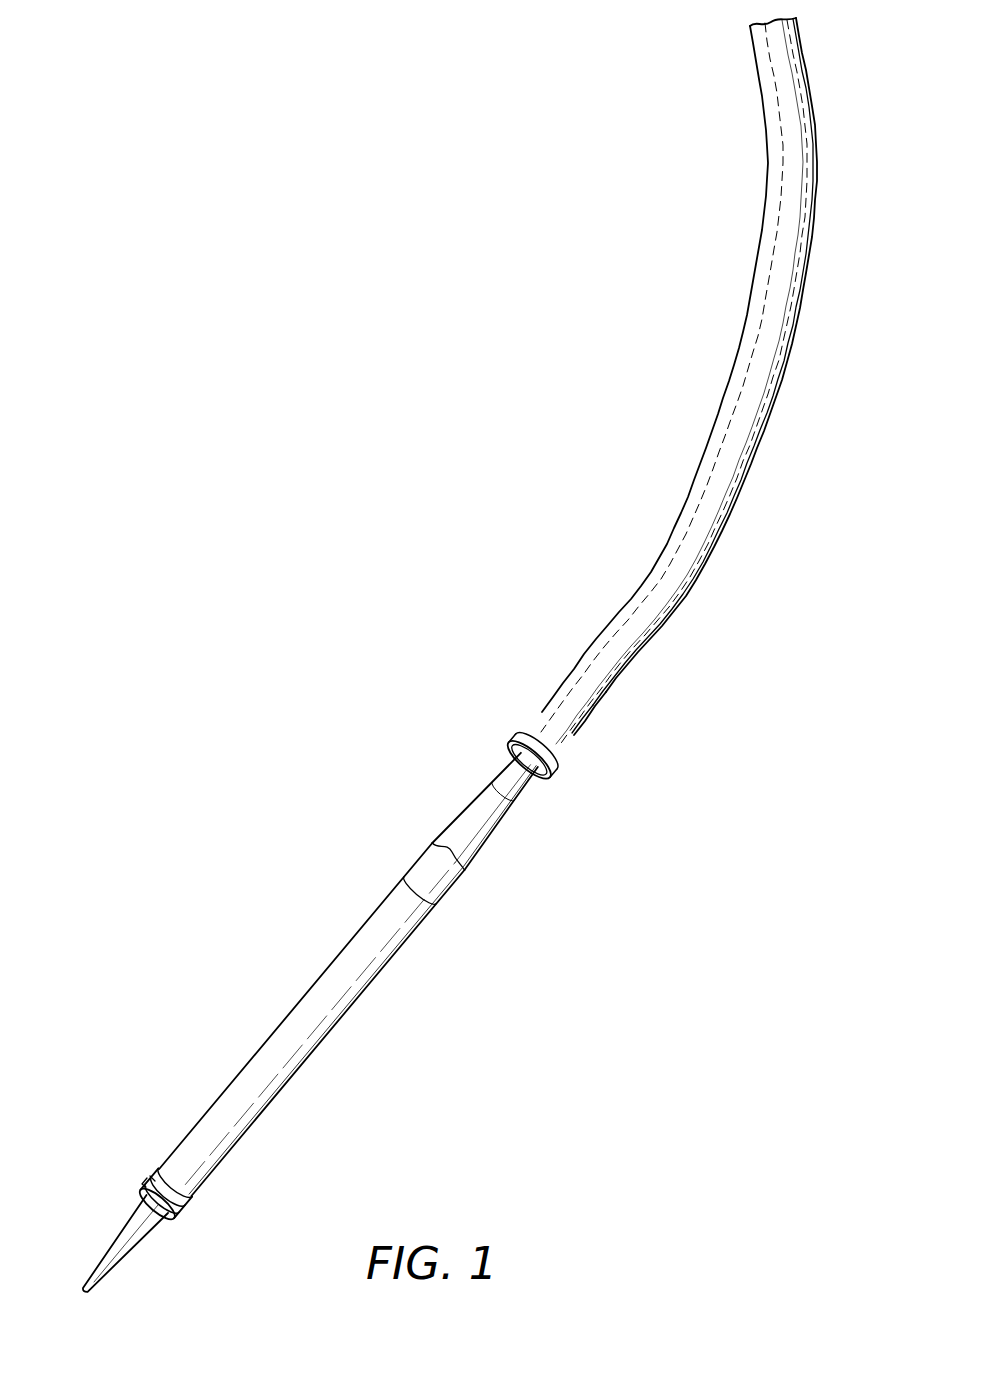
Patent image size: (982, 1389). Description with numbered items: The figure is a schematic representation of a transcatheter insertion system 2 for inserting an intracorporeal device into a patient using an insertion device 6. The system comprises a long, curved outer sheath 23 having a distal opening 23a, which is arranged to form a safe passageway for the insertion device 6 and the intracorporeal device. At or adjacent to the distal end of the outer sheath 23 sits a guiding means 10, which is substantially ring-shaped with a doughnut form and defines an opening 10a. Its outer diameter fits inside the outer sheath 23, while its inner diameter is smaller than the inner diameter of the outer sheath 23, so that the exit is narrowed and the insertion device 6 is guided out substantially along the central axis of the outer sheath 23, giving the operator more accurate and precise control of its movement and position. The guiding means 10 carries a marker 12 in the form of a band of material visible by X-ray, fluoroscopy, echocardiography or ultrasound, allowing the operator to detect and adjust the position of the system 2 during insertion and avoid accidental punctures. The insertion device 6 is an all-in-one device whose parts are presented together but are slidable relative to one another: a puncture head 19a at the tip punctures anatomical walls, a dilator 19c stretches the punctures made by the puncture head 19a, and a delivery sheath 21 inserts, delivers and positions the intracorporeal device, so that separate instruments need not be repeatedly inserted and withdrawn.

The transcatheter insertion system 2 is at (222, 727).
The insertion device 6 is at (432, 950).
The guiding means 10 is at (519, 736).
The opening 10a is at (506, 756).
The marker 12 is at (553, 773).
The puncture head 19a is at (126, 1225).
The dilator 19c is at (533, 778).
The delivery sheath 21 is at (238, 1075).
The outer sheath 23 is at (689, 490).
The distal opening 23a is at (573, 758).